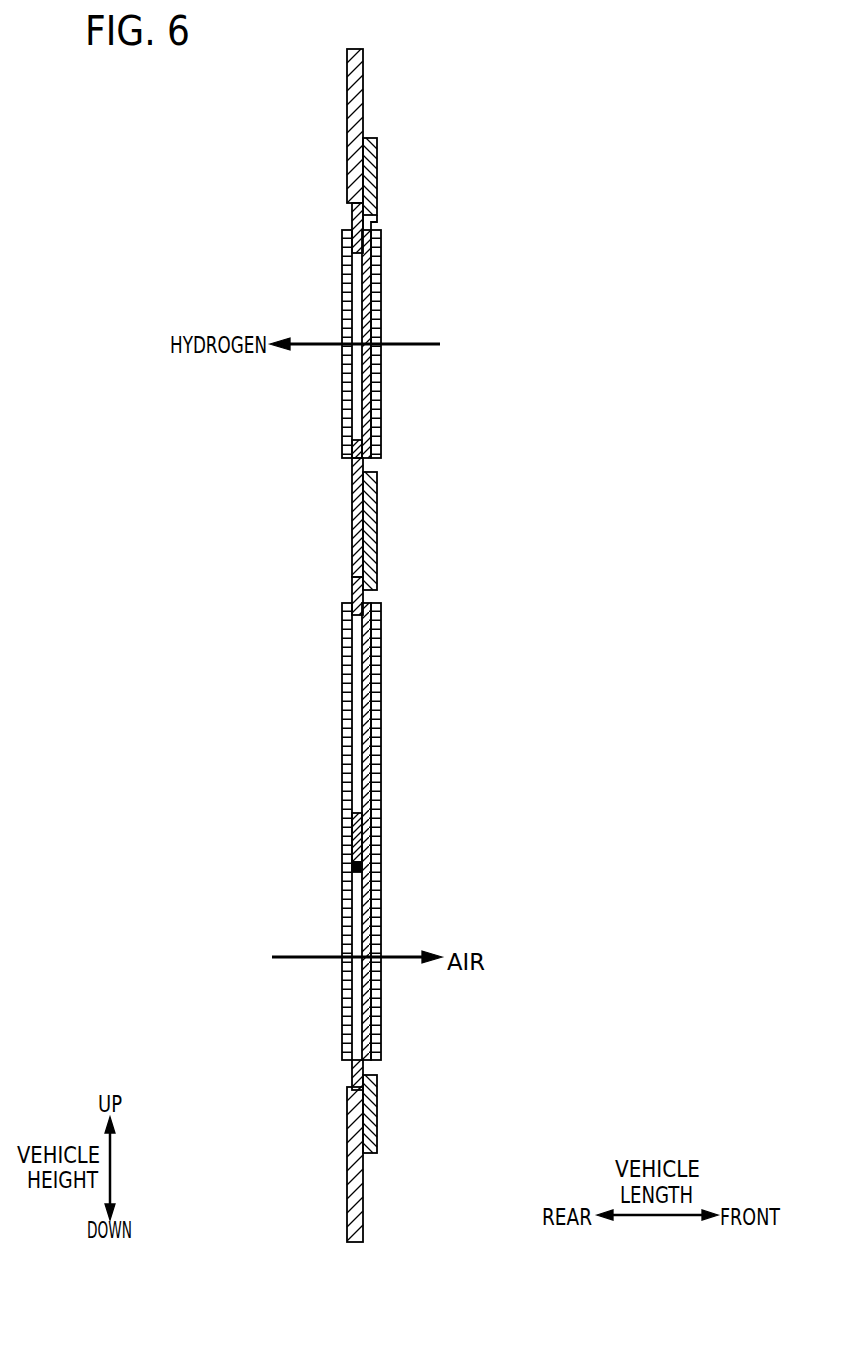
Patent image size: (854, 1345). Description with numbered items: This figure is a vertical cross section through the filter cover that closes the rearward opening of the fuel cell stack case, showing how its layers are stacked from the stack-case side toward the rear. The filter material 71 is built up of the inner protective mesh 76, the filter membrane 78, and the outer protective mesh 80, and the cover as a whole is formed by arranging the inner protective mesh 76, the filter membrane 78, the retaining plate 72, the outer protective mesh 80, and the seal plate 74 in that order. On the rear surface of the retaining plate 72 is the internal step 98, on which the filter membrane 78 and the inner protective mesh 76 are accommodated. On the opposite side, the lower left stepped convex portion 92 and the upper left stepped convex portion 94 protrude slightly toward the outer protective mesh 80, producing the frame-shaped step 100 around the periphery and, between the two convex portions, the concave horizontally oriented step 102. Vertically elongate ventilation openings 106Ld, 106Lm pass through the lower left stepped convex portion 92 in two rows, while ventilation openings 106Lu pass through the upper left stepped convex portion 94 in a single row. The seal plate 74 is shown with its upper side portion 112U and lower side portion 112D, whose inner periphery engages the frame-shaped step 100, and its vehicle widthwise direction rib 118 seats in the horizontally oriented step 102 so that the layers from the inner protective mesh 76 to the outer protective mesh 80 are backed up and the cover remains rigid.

The filter material 71 is at (343, 831).
The retaining plate 72 is at (341, 151).
The seal plate 74 is at (336, 98).
The inner protective mesh 76 is at (375, 680).
The filter membrane 78 is at (367, 748).
The outer protective mesh 80 is at (344, 710).
The lower left stepped convex portion 92 is at (352, 588).
The upper left stepped convex portion 94 is at (352, 216).
The internal step 98 is at (372, 223).
The frame-shaped step 100 is at (363, 1117).
The horizontally oriented step 102 is at (353, 537).
The ventilation openings 106Lu is at (355, 440).
The ventilation openings 106Lm is at (355, 815).
The ventilation openings 106Ld is at (355, 868).
The upper side portion 112U is at (347, 150).
The lower side portion 112D is at (346, 1197).
The vehicle widthwise direction rib 118 is at (357, 502).